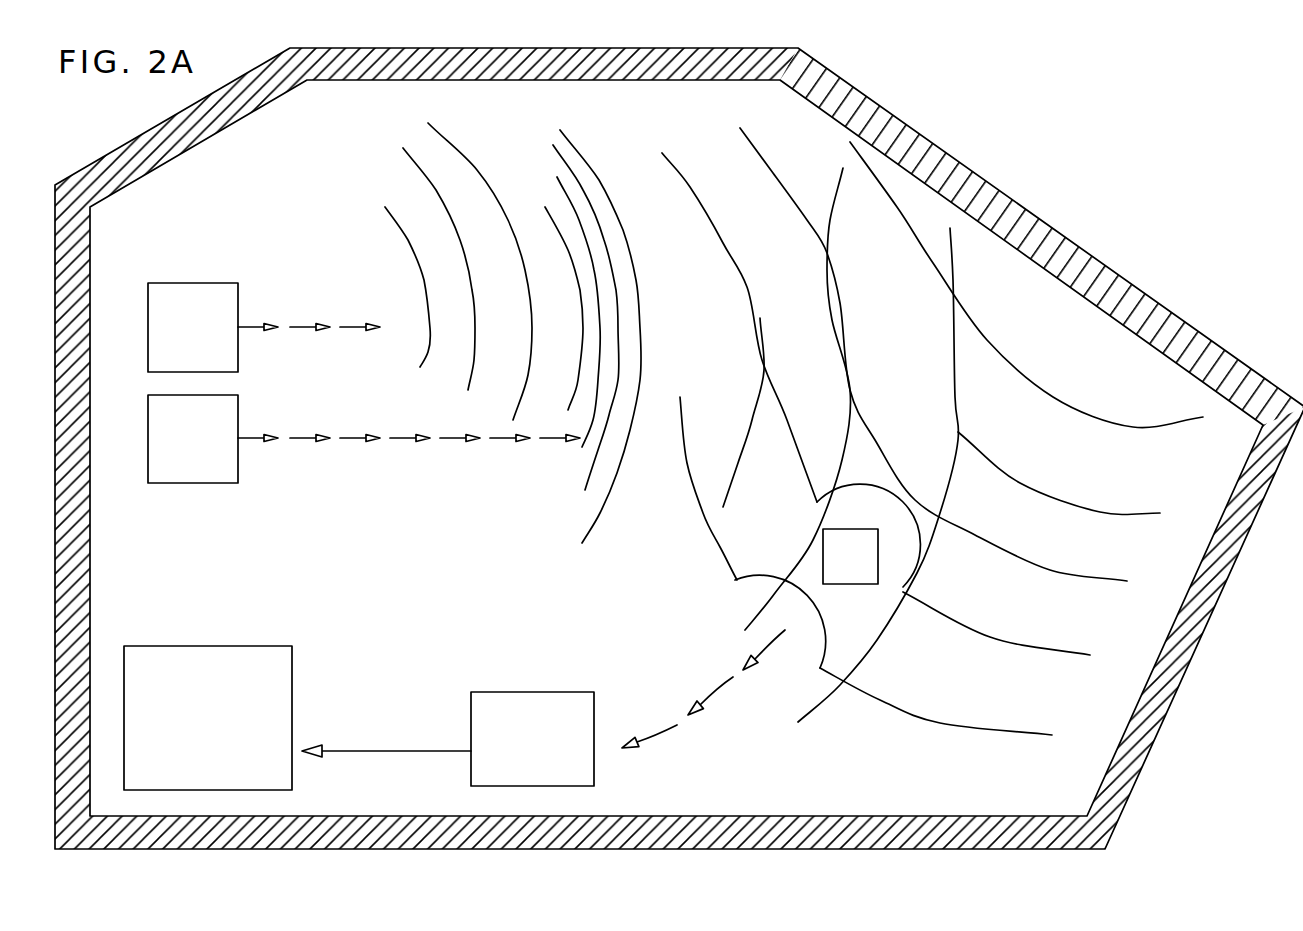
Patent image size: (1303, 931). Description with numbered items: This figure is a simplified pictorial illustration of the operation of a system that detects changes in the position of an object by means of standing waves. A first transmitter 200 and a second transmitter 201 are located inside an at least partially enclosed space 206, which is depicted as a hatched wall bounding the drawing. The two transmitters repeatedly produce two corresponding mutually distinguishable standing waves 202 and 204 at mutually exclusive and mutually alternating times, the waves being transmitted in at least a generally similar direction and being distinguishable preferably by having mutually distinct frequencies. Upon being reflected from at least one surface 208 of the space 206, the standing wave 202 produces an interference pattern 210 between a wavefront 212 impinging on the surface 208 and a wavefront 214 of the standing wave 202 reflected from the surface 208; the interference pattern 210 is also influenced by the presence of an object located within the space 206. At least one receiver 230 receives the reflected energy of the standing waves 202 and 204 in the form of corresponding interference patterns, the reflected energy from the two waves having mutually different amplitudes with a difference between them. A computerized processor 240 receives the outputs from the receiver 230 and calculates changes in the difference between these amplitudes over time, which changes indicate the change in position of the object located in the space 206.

The first transmitter 200 is at (148, 331).
The second transmitter 201 is at (148, 439).
The standing wave 202 is at (423, 115).
The standing wave 204 is at (553, 125).
The at least partially enclosed space 206 is at (1005, 152).
The surface 208 is at (858, 585).
The interference pattern 210 is at (708, 703).
The wavefront 212 is at (953, 410).
The wavefront 214 is at (950, 730).
The receiver 230 is at (488, 692).
The computerized processor 240 is at (181, 646).